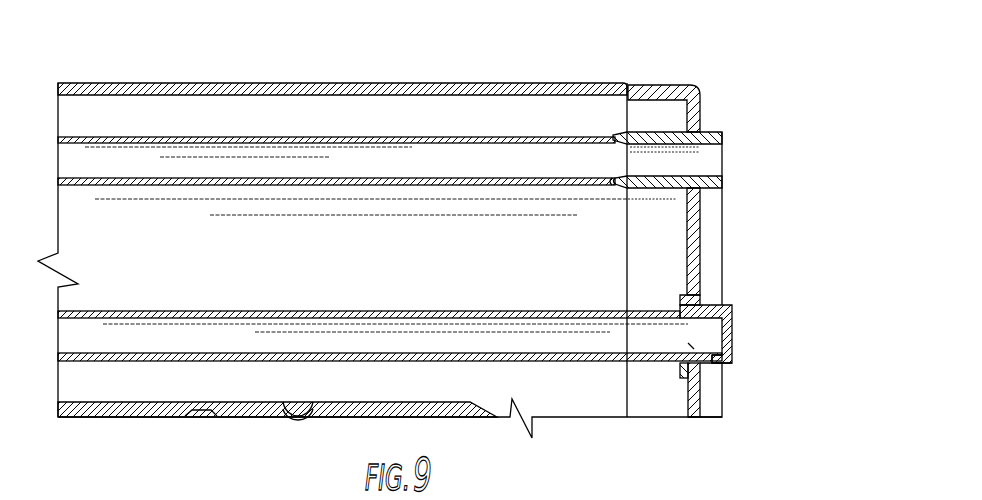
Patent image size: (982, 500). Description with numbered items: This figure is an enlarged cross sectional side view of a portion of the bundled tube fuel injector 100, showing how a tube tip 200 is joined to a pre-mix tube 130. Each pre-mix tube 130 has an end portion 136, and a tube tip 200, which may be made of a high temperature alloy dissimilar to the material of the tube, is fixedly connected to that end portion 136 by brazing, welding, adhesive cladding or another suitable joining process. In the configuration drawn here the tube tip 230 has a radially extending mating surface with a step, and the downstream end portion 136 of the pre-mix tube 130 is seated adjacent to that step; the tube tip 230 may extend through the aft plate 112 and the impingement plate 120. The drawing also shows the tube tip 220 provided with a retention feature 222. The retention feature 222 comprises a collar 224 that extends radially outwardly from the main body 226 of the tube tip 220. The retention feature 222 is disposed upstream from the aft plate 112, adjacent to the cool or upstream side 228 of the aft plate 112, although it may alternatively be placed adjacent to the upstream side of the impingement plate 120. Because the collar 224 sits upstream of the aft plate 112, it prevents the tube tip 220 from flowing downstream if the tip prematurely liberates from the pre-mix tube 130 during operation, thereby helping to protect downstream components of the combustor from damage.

The fuel injector 100 is at (567, 72).
The impingement plate 120 is at (627, 271).
The pre-mix tube 130 is at (227, 185).
The end portion 136 is at (608, 186).
The tube tip 230 is at (713, 128).
The tube tip 220 is at (716, 300).
The tube tip 200 is at (698, 499).
The upstream side 228 is at (687, 214).
The collar 224 is at (679, 292).
The main body 226 is at (717, 372).
The aft plate 112 is at (697, 402).
The retention feature 222 is at (683, 383).